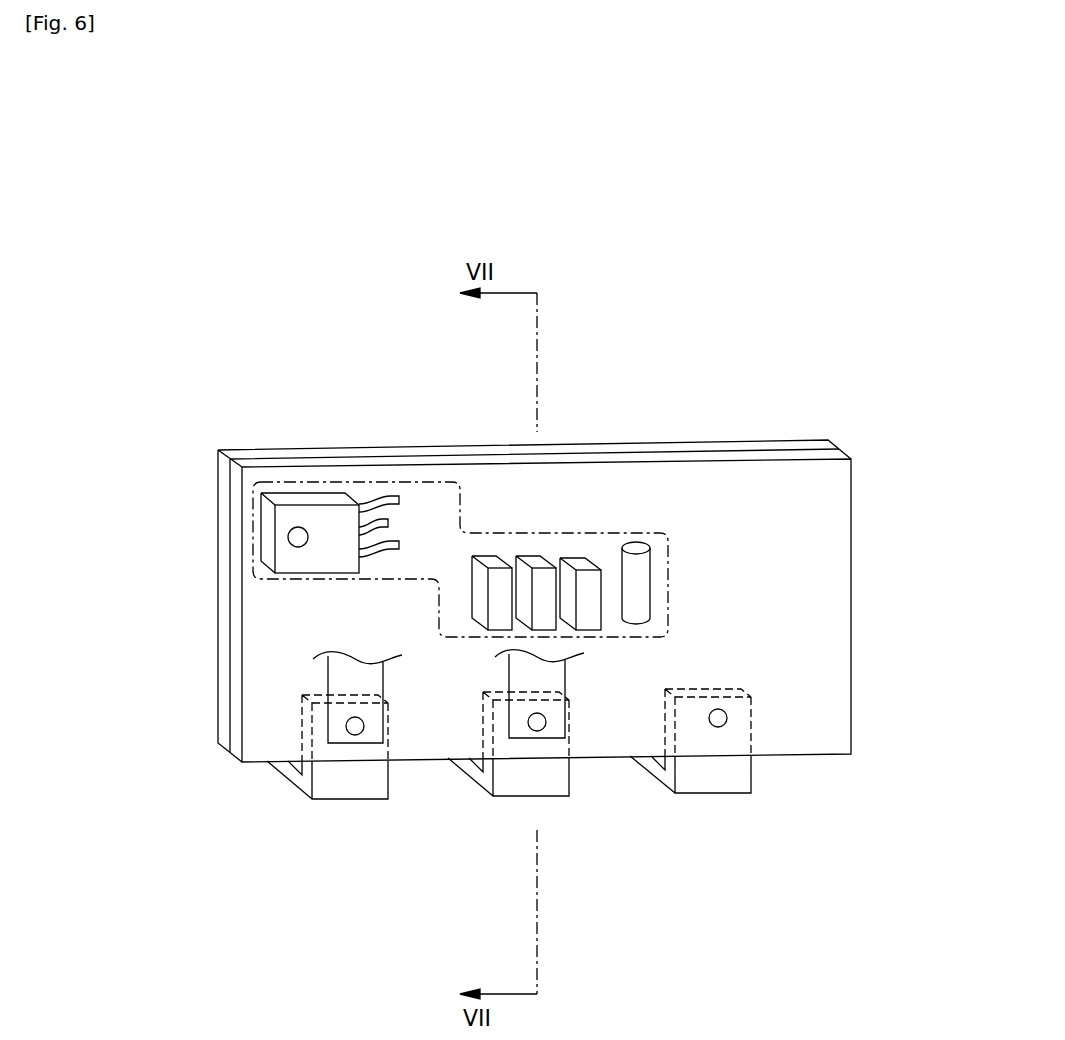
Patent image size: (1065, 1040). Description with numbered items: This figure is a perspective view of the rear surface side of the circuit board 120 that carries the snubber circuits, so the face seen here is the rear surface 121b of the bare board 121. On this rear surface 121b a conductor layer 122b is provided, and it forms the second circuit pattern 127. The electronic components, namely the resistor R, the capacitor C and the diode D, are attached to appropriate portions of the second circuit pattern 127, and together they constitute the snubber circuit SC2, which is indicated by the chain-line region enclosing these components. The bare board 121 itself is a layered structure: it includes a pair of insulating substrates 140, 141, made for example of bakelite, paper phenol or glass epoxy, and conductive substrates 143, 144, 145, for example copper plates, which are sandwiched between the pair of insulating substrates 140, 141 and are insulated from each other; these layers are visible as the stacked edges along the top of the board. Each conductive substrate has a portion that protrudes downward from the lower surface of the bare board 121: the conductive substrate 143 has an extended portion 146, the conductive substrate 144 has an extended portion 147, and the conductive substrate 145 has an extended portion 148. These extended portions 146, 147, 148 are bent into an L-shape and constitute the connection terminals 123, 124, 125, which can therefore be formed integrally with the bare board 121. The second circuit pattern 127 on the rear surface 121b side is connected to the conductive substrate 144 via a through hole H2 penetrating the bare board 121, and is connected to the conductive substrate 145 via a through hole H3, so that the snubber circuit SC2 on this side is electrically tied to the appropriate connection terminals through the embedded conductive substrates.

The circuit board 120 is at (529, 535).
The bare board 121 is at (534, 535).
The insulating substrate 140 is at (534, 601).
The insulating substrate 141 is at (832, 348).
The rear surface 121b is at (823, 510).
The snubber circuit SC2 is at (253, 540).
The diode D is at (323, 513).
The capacitor C is at (584, 560).
The resistor R is at (645, 548).
The second circuit pattern 127 is at (328, 671).
The conductor layer 122b is at (565, 673).
The through hole H3 is at (346, 725).
The through hole H2 is at (537, 731).
The connection terminal 125 is at (312, 789).
The extended portion 148 is at (279, 773).
The connection terminal 124 is at (495, 787).
The extended portion 147 is at (455, 773).
The connection terminal 123 is at (676, 784).
The extended portion 146 is at (717, 811).
The conductive substrate 145 is at (273, 776).
The conductive substrate 144 is at (671, 775).
The conductive substrate 143 is at (676, 794).